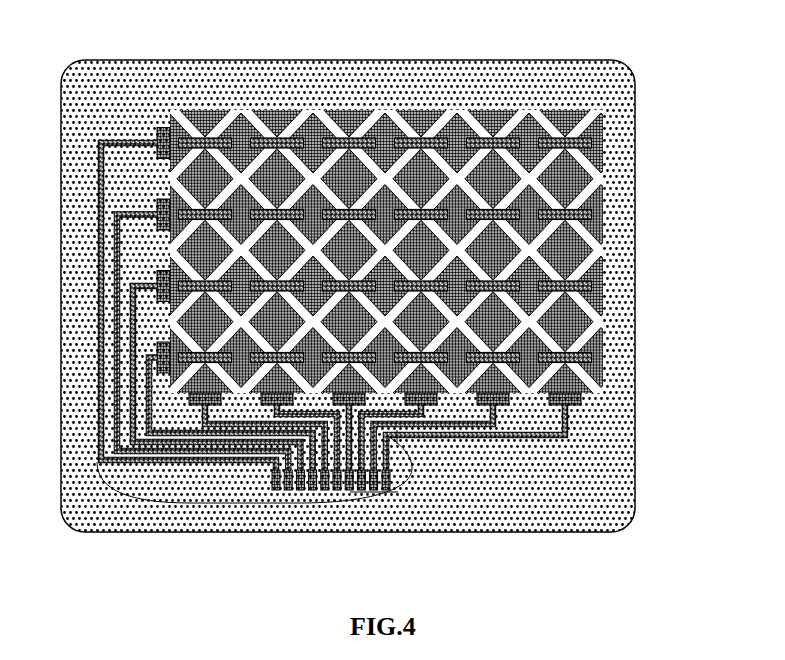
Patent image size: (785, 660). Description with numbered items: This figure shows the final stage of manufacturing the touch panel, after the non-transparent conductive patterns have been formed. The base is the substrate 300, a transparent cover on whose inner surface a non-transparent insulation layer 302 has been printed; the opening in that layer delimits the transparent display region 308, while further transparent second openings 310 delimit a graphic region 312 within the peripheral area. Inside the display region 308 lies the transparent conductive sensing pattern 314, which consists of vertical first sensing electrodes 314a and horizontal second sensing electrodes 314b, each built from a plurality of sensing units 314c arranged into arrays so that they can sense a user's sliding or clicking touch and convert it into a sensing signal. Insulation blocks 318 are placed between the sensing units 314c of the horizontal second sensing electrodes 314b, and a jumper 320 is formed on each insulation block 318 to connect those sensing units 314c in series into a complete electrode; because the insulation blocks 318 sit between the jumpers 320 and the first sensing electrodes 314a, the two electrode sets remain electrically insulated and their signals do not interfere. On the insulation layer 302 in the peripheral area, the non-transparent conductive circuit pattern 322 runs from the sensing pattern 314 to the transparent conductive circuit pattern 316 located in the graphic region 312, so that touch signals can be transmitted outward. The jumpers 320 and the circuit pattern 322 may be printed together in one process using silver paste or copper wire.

The substrate 300 is at (672, 58).
The non-transparent insulation layer 302 is at (90, 292).
The transparent display region 308 is at (437, 250).
The second openings 310 is at (300, 493).
The graphic region 312 is at (152, 473).
The transparent conductive sensing pattern 314 is at (455, 250).
The first sensing electrodes 314a is at (585, 388).
The second sensing electrodes 314b is at (595, 353).
The sensing units 314c is at (593, 321).
The transparent conductive circuit pattern 316 is at (292, 355).
The insulation blocks 318 is at (597, 269).
The jumpers 320 is at (602, 286).
The non-transparent conductive circuit pattern 322 is at (92, 322).